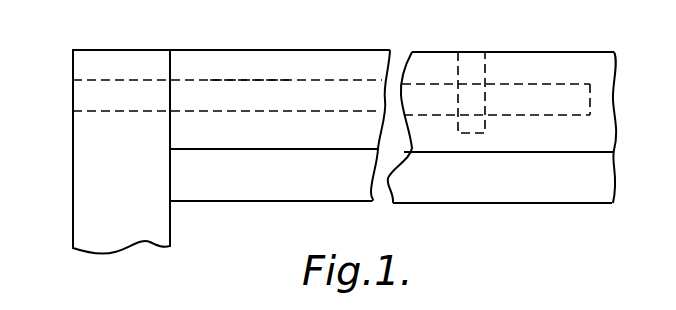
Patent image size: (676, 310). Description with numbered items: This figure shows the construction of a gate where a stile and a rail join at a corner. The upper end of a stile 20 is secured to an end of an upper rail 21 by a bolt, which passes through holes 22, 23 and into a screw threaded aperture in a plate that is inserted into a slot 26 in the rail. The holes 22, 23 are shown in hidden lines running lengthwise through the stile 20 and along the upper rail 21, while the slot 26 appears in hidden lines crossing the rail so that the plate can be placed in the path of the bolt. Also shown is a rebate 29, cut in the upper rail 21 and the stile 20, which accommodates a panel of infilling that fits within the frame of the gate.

The stile 20 is at (115, 57).
The upper rail 21 is at (345, 60).
The hole 22 is at (76, 96).
The hole 23 is at (249, 84).
The slot 26 is at (463, 73).
The rebate 29 is at (524, 180).